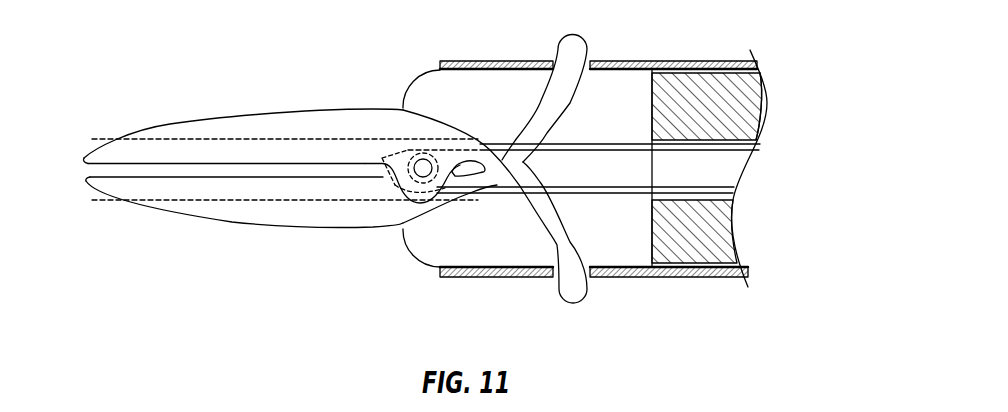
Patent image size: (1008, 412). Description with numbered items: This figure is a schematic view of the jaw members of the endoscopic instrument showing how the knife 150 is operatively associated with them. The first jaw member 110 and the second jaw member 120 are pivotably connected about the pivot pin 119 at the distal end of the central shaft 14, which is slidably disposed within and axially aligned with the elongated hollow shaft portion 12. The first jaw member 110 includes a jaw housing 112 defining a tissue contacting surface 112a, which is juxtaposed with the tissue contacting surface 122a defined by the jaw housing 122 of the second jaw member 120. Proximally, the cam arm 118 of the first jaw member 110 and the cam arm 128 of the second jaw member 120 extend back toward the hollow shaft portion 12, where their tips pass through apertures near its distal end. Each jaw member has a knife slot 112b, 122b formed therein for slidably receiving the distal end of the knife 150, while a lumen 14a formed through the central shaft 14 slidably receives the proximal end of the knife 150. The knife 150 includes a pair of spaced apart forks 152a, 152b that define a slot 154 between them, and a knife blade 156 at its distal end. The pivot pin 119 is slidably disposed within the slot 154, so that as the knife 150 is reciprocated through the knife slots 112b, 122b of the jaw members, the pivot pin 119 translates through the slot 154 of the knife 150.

The elongated hollow shaft portion 12 is at (717, 62).
The central shaft 14 is at (750, 104).
The lumen 14a is at (760, 120).
The first jaw member 110 is at (232, 118).
The jaw housing 112 is at (317, 123).
The tissue contacting surface 112a is at (174, 164).
The knife slot 112b is at (325, 138).
The cam arm 118 is at (542, 220).
The pivot pin 119 is at (423, 159).
The second jaw member 120 is at (232, 222).
The jaw housing 122 is at (373, 224).
The tissue contacting surface 122a is at (152, 173).
The knife slot 122b is at (302, 200).
The cam arm 128 is at (547, 109).
The knife 150 is at (642, 138).
The fork 152a is at (573, 124).
The fork 152b is at (566, 200).
The slot 154 is at (633, 173).
The knife blade 156 is at (378, 170).